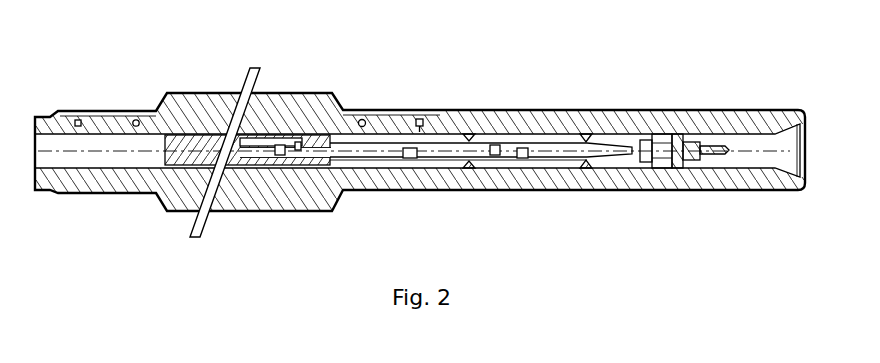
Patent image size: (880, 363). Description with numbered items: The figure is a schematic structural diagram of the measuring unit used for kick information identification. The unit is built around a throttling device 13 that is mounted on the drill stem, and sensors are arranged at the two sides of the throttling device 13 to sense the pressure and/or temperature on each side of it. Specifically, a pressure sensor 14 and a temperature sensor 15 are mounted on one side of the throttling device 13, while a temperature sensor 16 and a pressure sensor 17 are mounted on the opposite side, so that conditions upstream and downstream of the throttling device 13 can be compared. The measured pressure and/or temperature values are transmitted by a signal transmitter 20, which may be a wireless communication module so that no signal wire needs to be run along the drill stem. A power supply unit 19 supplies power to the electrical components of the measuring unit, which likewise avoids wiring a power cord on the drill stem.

The throttling device 13 is at (273, 123).
The pressure sensor 14 is at (84, 112).
The temperature sensor 15 is at (142, 112).
The temperature sensor 16 is at (366, 112).
The pressure sensor 17 is at (425, 112).
The power supply unit 19 is at (527, 153).
The signal transmitter 20 is at (680, 168).